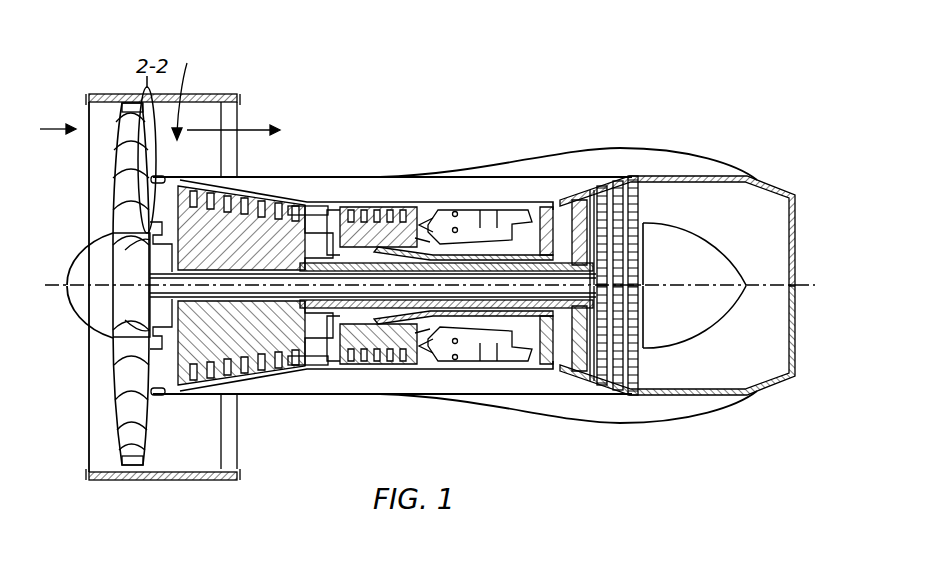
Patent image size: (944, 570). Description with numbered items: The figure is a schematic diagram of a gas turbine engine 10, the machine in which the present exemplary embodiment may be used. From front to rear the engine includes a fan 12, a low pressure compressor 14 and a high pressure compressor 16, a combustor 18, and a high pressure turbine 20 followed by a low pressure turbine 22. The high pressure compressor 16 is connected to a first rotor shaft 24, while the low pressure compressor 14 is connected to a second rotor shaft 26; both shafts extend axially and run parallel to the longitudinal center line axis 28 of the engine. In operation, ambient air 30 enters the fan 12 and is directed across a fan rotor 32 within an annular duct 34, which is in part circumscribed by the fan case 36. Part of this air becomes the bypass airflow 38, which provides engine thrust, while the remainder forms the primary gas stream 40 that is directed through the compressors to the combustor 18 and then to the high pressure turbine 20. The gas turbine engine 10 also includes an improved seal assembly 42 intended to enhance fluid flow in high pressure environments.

The gas turbine engine 10 is at (569, 44).
The fan 12 is at (105, 179).
The low pressure compressor 14 is at (263, 233).
The high pressure compressor 16 is at (380, 322).
The combustor 18 is at (463, 357).
The high pressure turbine 20 is at (549, 202).
The low pressure turbine 22 is at (675, 180).
The first rotor shaft 24 is at (485, 317).
The second rotor shaft 26 is at (553, 340).
The longitudinal center line axis 28 is at (808, 283).
The ambient air 30 is at (57, 123).
The fan rotor 32 is at (132, 460).
The annular duct 34 is at (222, 443).
The fan case 36 is at (178, 481).
The bypass airflow 38 is at (263, 120).
The primary gas stream 40 is at (343, 200).
The seal assembly 42 is at (186, 90).